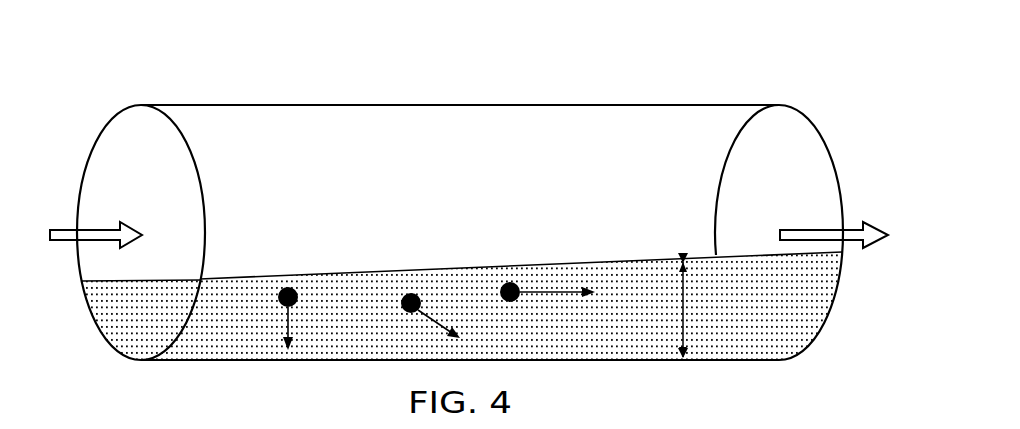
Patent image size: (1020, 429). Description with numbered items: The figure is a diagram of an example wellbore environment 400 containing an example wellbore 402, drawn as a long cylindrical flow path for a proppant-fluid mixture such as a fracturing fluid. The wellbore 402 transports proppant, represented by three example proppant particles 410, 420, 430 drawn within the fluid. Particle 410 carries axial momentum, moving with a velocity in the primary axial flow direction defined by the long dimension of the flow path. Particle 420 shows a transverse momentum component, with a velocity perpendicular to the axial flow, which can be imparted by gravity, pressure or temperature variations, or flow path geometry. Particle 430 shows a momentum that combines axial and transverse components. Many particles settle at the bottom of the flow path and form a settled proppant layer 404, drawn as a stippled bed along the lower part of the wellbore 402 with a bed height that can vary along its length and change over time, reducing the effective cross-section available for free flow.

The wellbore environment 400 is at (469, 188).
The wellbore 402 is at (469, 208).
The settled proppant layer 404 is at (630, 265).
The proppant particle 410 is at (512, 281).
The proppant particle 420 is at (284, 289).
The proppant particle 430 is at (403, 293).